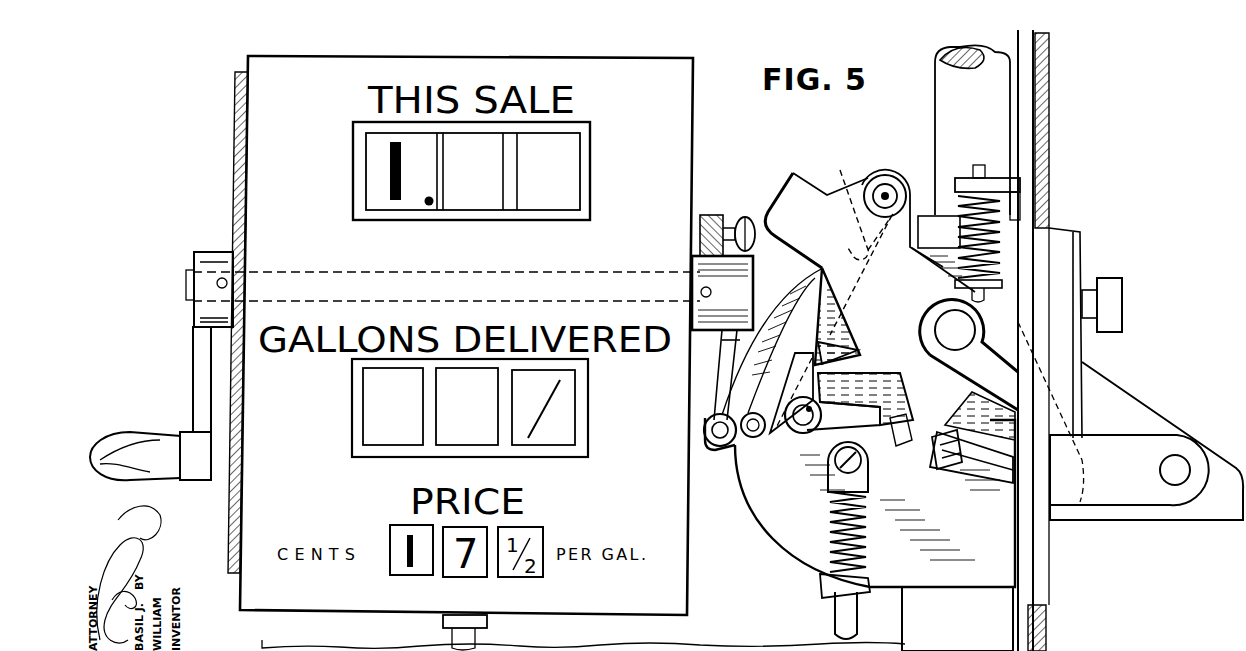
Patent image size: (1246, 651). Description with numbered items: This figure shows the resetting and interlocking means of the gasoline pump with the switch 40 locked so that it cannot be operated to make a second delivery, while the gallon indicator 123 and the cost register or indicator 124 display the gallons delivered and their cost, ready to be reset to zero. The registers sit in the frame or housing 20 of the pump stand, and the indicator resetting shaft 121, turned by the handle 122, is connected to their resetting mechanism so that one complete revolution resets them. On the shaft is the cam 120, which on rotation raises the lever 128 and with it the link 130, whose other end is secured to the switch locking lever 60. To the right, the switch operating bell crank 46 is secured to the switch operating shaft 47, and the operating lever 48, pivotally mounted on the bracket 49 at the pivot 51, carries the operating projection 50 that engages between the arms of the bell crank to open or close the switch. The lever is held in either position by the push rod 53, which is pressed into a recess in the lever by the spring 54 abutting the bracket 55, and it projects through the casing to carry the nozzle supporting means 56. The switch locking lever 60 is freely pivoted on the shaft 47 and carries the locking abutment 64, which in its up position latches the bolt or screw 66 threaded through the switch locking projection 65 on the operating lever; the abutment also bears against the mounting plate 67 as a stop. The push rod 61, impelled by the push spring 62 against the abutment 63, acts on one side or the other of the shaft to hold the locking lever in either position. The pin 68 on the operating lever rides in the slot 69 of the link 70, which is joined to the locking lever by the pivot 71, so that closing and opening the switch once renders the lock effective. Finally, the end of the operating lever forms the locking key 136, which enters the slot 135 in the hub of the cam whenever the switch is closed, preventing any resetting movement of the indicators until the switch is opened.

The frame or housing 20 is at (238, 100).
The cam 120 is at (692, 257).
The indicator resetting shaft 121 is at (284, 300).
The handle 122 is at (126, 440).
The gallon indicator 123 is at (372, 456).
The cost register or indicator 124 is at (352, 168).
The lever 128 is at (715, 215).
The link 130 is at (722, 374).
The slot 135 is at (742, 318).
The locking key 136 is at (795, 192).
The slot 69 is at (859, 245).
The pin 68 is at (885, 190).
The link 70 is at (822, 270).
The operating lever 48 is at (836, 318).
The operating projection 50 is at (858, 362).
The switch operating bell crank 46 is at (848, 418).
The switch operating shaft 47 is at (806, 434).
The bracket 49 is at (978, 368).
The pivot 51 is at (946, 326).
The push rod 53 is at (986, 294).
The spring 54 is at (962, 237).
The bracket 55 is at (1020, 190).
The nozzle supporting means 56 is at (1150, 428).
The mounting plate 67 is at (1080, 332).
The switch locking projection 65 is at (925, 438).
The bolt or screw 66 is at (944, 466).
The locking abutment 64 is at (983, 462).
The switch 40 is at (783, 505).
The pivot 71 is at (736, 452).
The switch locking lever 60 is at (780, 443).
The push spring 62 is at (866, 530).
The abutment 63 is at (821, 592).
The push rod 61 is at (845, 622).